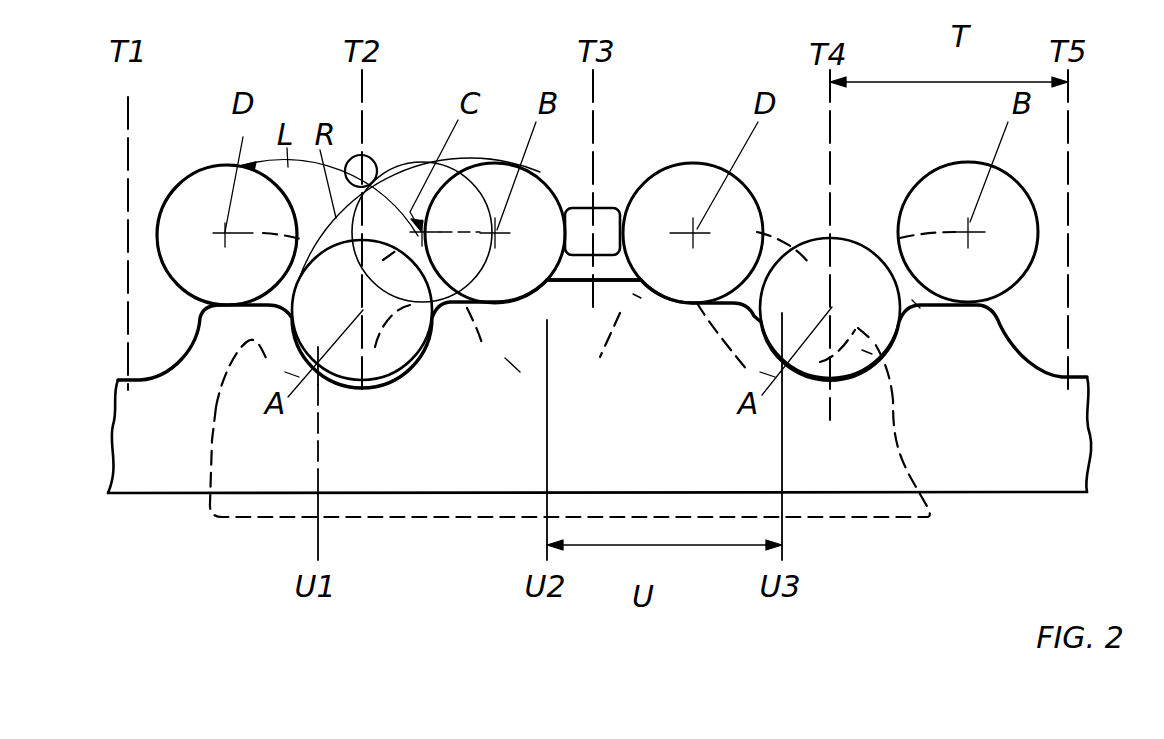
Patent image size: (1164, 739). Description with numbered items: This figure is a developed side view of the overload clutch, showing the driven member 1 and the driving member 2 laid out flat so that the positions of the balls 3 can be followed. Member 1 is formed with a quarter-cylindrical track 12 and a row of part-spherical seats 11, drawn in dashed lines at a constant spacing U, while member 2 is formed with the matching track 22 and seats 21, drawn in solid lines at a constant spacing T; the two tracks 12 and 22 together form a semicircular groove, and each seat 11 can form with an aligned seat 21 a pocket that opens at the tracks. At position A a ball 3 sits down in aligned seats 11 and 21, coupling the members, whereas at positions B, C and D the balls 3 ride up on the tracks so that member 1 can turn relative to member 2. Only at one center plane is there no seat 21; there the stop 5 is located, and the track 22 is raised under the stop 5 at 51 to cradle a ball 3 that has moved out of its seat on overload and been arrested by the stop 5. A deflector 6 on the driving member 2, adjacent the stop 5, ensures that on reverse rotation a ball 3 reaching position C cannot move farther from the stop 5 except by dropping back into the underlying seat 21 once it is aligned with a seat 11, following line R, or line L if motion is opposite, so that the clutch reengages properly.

The driven member 1 is at (890, 517).
The driving member 2 is at (1020, 490).
The ball 3 is at (204, 193).
The stop 5 is at (588, 225).
The deflector 6 is at (368, 163).
The seat 11 is at (521, 363).
The track 12 is at (633, 302).
The seat 21 is at (864, 348).
The track 22 is at (924, 298).
The raised portion of track 51 is at (578, 283).